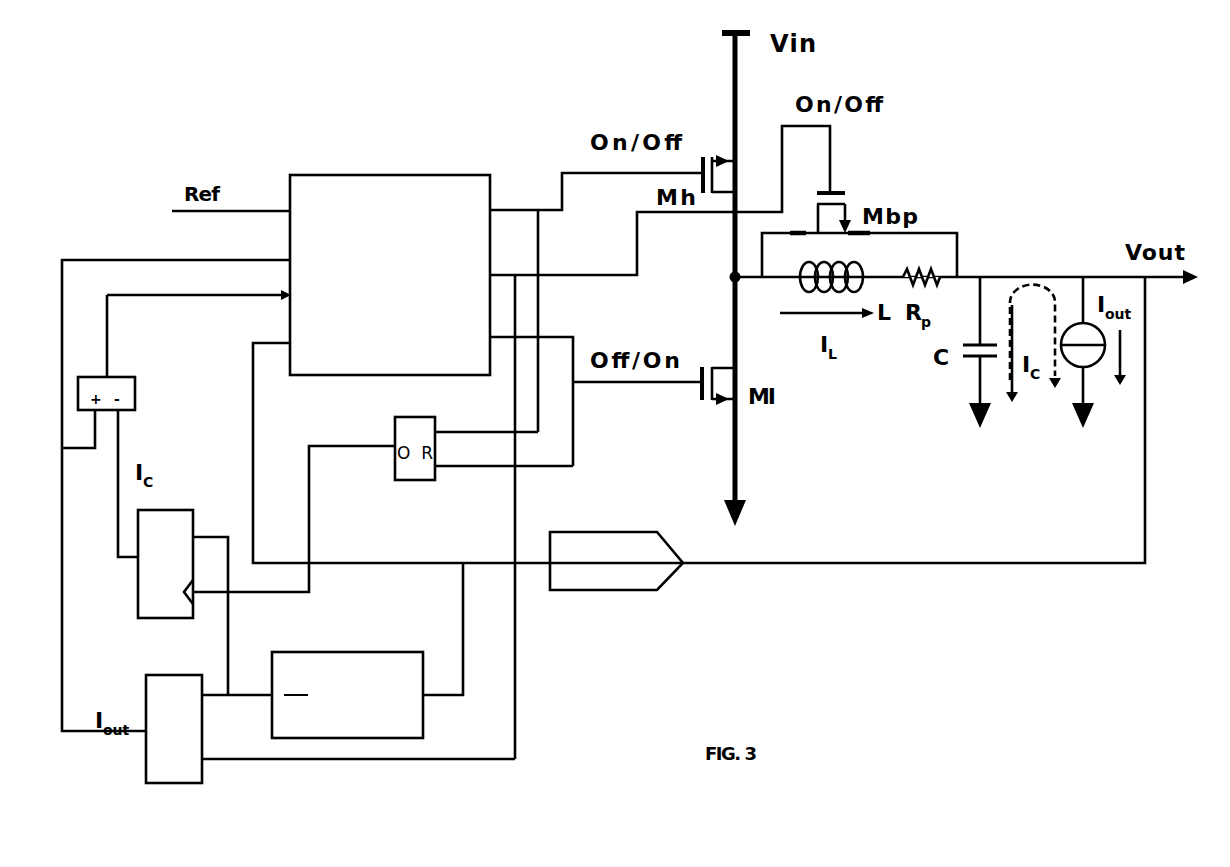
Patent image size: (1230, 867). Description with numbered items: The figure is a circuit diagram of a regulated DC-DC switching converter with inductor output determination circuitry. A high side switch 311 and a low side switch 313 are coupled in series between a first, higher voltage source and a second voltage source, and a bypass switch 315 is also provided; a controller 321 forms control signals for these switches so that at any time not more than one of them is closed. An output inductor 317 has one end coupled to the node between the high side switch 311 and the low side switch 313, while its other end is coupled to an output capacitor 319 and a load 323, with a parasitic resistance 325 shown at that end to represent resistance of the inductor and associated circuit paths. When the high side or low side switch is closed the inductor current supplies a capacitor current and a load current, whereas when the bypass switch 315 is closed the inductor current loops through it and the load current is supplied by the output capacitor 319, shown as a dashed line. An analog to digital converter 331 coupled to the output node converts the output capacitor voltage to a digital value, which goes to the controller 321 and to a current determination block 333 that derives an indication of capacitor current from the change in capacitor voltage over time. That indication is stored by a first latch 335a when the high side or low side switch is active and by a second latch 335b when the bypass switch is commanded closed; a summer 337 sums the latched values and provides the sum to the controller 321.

The high side switch 311 is at (729, 139).
The low side switch 313 is at (716, 362).
The bypass switch 315 is at (837, 190).
The output inductor 317 is at (800, 288).
The output capacitor 319 is at (967, 370).
The controller 321 is at (398, 172).
The load 323 is at (1093, 372).
The parasitic resistance 325 is at (915, 268).
The analog to digital converter 331 is at (660, 592).
The current determination block 333 is at (350, 650).
The first latch 335a is at (170, 508).
The second latch 335b is at (158, 673).
The summer 337 is at (125, 375).